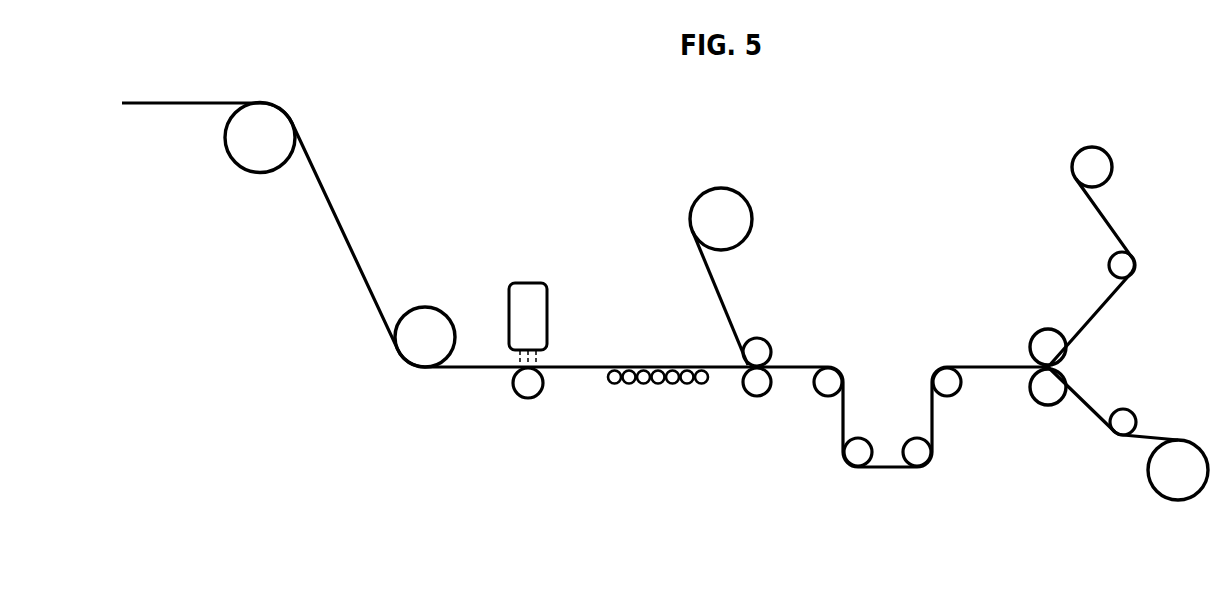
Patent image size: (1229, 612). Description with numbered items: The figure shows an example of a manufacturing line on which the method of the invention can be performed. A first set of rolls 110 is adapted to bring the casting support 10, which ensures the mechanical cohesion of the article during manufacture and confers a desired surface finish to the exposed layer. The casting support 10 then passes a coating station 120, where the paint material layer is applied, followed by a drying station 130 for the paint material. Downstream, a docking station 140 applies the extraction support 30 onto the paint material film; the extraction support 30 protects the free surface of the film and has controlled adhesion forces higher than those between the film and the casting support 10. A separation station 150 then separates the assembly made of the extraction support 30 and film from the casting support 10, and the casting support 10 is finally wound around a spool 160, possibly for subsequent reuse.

The casting support 10 is at (336, 224).
The extraction support 30 is at (710, 284).
The first set of rolls 110 is at (450, 171).
The coating station 120 is at (527, 282).
The drying station 130 is at (652, 395).
The docking station 140 is at (752, 230).
The separation station 150 is at (1016, 281).
The spool 160 is at (1148, 480).